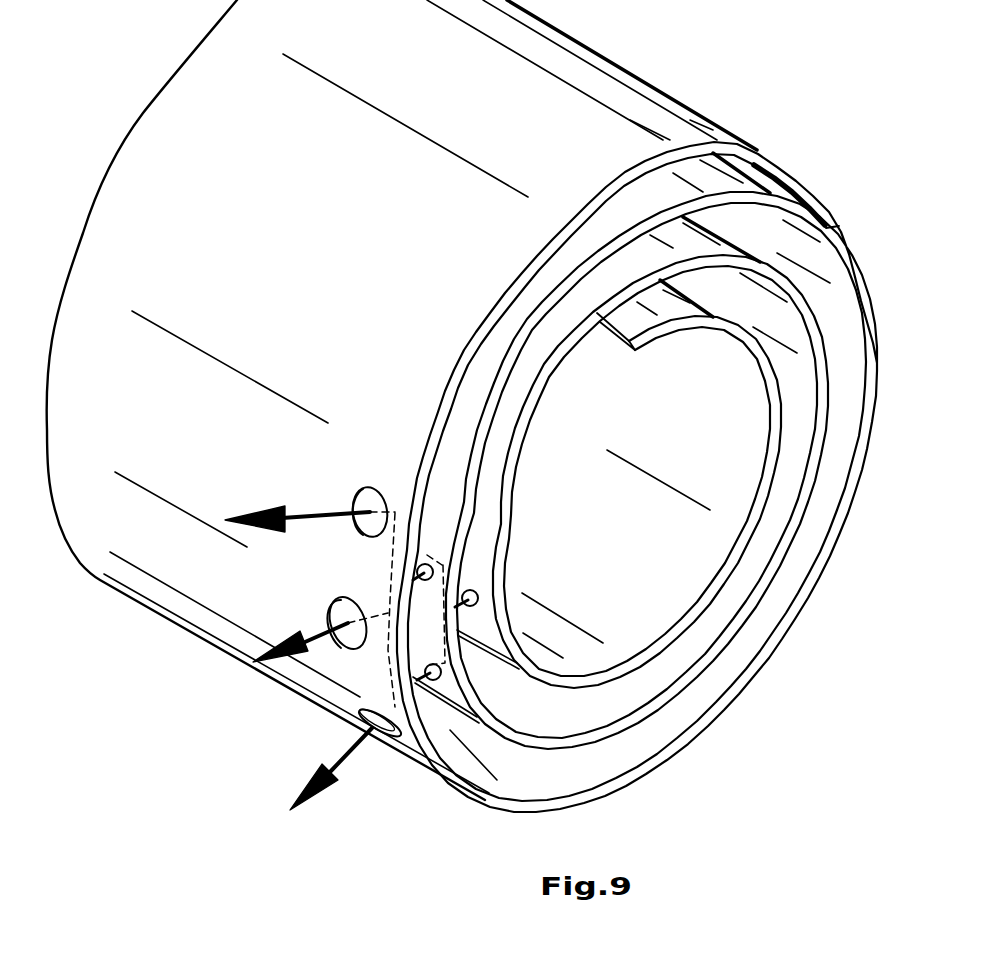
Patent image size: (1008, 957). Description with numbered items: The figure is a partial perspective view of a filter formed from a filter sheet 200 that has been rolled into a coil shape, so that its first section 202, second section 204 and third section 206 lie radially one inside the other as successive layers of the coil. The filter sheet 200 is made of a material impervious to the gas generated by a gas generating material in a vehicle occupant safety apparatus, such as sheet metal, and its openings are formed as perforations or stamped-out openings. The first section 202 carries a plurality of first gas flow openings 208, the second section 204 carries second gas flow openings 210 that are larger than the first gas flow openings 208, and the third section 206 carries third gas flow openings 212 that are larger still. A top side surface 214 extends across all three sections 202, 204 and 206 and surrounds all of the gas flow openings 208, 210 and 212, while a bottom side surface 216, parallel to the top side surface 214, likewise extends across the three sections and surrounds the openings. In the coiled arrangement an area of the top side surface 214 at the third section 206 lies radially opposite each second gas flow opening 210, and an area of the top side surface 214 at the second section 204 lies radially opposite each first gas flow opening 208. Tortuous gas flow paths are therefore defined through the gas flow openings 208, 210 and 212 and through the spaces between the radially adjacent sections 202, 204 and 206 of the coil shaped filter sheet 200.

The filter sheet 200 is at (114, 97).
The first section 202 is at (759, 534).
The second section 204 is at (768, 601).
The third section 206 is at (770, 677).
The first gas flow openings 208 is at (472, 594).
The second gas flow openings 210 is at (430, 566).
The third gas flow openings 212 is at (355, 485).
The top side surface 214 is at (617, 701).
The bottom side surface 216 is at (540, 367).